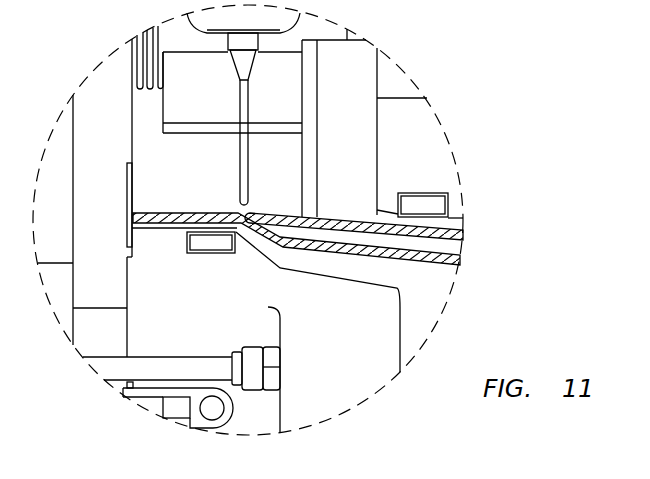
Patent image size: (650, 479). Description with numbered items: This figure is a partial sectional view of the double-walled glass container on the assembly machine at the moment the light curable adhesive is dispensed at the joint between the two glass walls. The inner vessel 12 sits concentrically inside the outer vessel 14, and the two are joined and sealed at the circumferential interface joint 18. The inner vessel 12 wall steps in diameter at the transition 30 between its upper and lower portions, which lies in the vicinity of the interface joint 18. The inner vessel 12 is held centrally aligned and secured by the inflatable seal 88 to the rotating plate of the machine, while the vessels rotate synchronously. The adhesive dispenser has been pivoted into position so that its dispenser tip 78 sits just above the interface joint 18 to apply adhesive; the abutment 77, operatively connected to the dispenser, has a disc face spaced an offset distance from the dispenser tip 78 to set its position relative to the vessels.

The inner vessel 12 is at (348, 253).
The outer vessel 14 is at (365, 217).
The interface joint 18 is at (250, 225).
The transition 30 is at (254, 240).
The abutment 77 is at (355, 63).
The dispenser tip 78 is at (239, 172).
The inflatable seal 88 is at (202, 242).